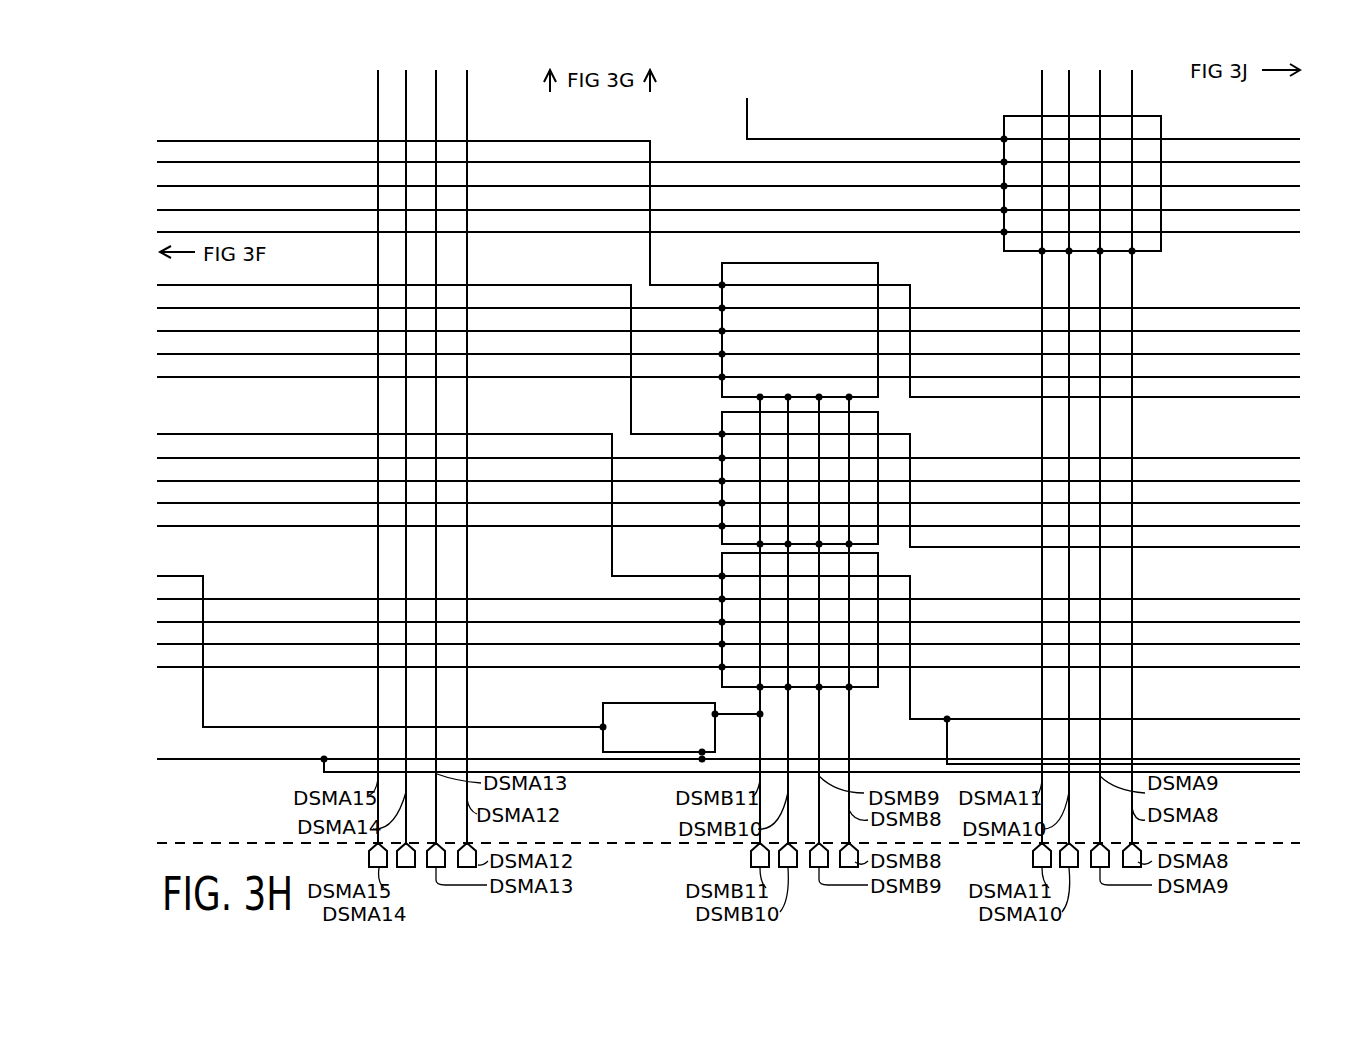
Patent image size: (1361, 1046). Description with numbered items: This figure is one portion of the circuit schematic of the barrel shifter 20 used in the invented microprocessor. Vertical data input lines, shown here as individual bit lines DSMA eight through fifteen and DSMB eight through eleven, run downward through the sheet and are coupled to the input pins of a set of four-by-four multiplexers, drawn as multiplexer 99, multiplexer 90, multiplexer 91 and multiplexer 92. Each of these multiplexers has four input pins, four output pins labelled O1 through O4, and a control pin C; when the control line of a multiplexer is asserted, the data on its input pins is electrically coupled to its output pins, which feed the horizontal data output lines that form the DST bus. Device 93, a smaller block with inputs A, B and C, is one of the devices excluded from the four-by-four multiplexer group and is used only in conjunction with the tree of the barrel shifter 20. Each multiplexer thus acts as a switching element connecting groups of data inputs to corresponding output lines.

The multiplexer 99 is at (1161, 118).
The multiplexer 90 is at (878, 266).
The multiplexer 91 is at (878, 414).
The multiplexer 92 is at (722, 563).
The multiplexer 93 is at (603, 703).
The barrel shifter 20 is at (1276, 845).